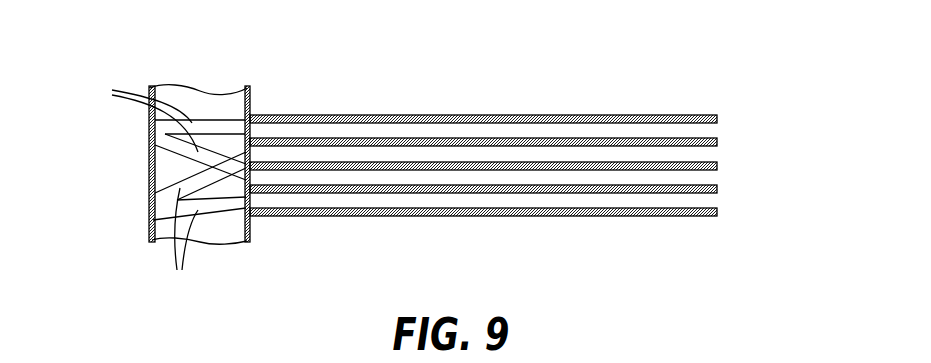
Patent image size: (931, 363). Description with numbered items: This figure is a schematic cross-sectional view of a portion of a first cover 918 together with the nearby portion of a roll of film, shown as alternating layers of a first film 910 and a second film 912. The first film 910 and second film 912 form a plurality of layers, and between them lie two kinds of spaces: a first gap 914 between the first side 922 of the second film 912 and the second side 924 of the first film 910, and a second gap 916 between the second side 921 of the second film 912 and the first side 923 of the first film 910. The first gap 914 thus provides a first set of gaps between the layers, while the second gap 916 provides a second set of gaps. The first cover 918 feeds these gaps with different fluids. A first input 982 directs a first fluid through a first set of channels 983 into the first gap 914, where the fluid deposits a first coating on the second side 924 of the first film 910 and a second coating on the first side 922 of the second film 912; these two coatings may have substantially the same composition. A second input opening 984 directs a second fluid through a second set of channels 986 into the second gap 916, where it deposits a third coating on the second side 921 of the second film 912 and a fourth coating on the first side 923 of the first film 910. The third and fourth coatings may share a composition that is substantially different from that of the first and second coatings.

The first film 910 is at (717, 119).
The second film 912 is at (717, 143).
The first gap 914 is at (518, 178).
The second gap 916 is at (330, 153).
The first cover 918 is at (203, 88).
The second side of the second film 921 is at (660, 143).
The first side of the second film 922 is at (650, 140).
The first side of the first film 923 is at (593, 163).
The second side of the first film 924 is at (603, 168).
The first input 982 is at (150, 137).
The first set of channels 983 is at (130, 115).
The second input opening 984 is at (150, 212).
The second set of channels 986 is at (184, 245).